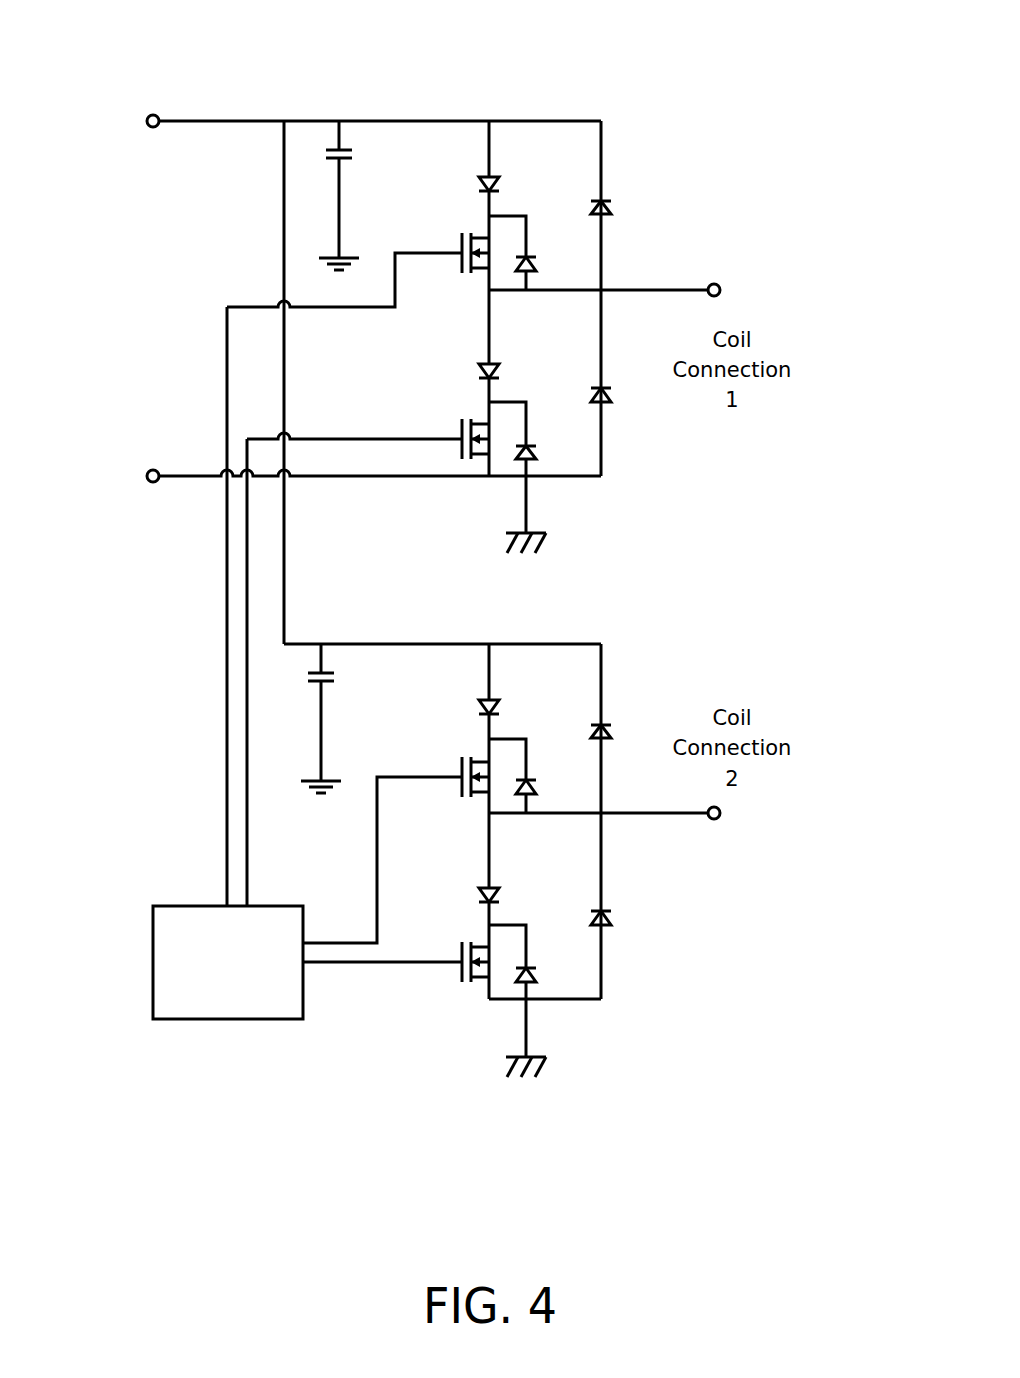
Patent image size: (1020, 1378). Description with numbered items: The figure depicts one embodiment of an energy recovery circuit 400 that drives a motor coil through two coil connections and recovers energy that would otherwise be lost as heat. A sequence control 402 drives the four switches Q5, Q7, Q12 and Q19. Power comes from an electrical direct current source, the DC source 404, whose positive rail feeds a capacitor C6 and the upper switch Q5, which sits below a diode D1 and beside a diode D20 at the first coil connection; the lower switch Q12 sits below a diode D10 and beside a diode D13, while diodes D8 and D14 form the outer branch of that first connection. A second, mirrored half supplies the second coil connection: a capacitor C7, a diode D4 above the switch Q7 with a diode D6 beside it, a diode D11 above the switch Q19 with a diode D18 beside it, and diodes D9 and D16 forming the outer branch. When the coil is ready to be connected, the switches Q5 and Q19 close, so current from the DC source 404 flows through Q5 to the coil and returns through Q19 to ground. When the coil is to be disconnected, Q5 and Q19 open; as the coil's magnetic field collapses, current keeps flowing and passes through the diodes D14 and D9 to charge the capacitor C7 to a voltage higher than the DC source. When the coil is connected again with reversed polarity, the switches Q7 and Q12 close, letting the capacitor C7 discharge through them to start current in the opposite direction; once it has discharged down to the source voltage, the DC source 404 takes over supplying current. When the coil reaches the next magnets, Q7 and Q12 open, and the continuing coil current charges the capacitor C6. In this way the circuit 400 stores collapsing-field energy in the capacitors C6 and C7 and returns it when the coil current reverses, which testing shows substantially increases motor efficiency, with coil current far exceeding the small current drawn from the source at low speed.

The energy recovery circuit 400 is at (162, 48).
The sequence control 402 is at (208, 1000).
The DC source 404 is at (133, 322).
The capacitor C6 is at (356, 195).
The capacitor C7 is at (338, 718).
The diode D1 is at (473, 181).
The diode D4 is at (470, 708).
The diode D6 is at (538, 776).
The diode D8 is at (620, 208).
The diode D9 is at (618, 735).
The diode D10 is at (465, 368).
The diode D11 is at (463, 895).
The diode D13 is at (538, 439).
The diode D14 is at (627, 395).
The diode D16 is at (624, 921).
The diode D18 is at (537, 962).
The diode D20 is at (539, 253).
The switch Q5 is at (358, 270).
The switch Q7 is at (396, 850).
The switch Q12 is at (368, 430).
The switch Q19 is at (396, 955).